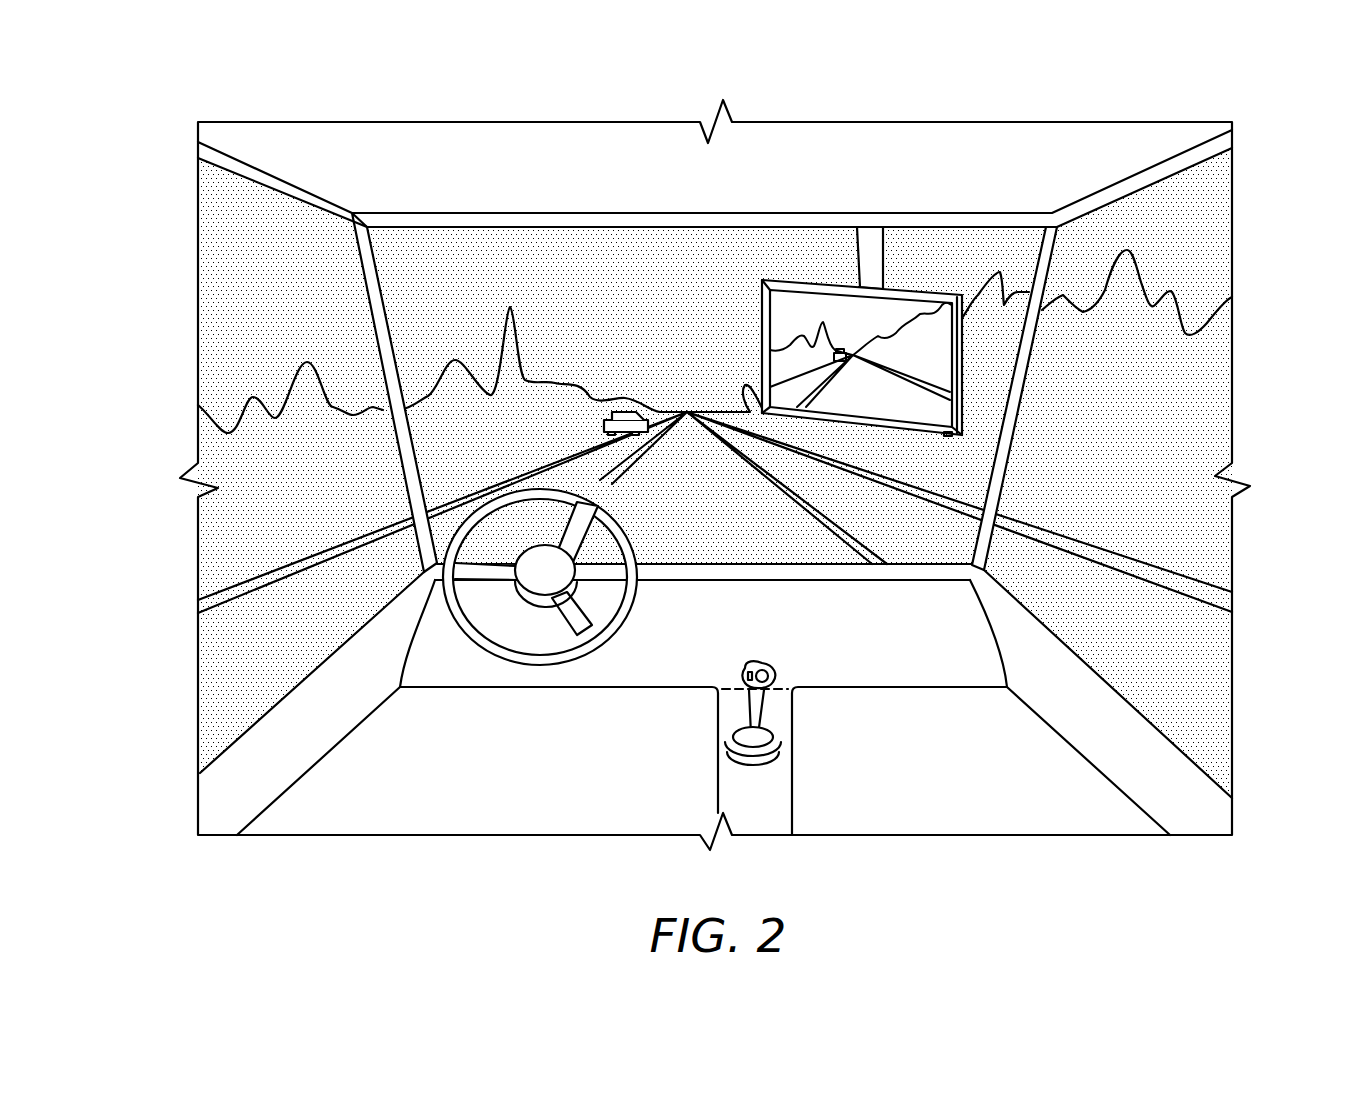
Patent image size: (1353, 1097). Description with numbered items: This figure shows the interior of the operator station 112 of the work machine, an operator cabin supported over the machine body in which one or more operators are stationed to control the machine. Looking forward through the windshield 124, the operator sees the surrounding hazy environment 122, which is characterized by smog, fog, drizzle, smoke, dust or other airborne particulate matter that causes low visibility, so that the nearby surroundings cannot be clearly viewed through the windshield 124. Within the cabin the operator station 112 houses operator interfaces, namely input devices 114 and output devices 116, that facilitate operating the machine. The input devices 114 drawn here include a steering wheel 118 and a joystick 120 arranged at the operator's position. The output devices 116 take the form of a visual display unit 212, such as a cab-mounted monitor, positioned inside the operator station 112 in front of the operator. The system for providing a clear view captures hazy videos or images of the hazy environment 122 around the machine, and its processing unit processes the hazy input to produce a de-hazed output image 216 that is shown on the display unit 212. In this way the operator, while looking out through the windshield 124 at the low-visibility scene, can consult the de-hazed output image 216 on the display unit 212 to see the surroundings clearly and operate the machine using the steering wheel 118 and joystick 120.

The operator station 112 is at (1013, 155).
The input devices 114 is at (650, 593).
The output devices 116 is at (836, 275).
The steering wheel 118 is at (457, 640).
The joystick 120 is at (752, 667).
The hazy environment 122 is at (428, 338).
The windshield 124 is at (430, 458).
The display unit 212 is at (962, 348).
The de-hazed output image 216 is at (898, 325).